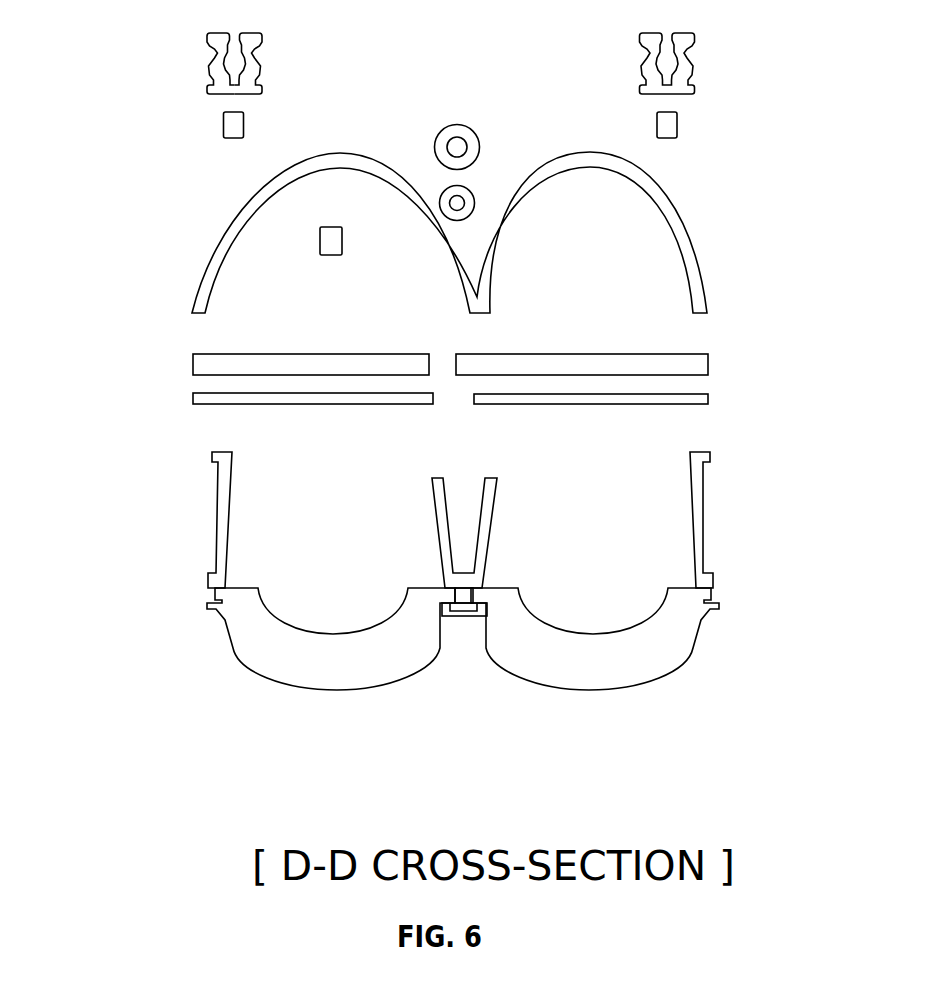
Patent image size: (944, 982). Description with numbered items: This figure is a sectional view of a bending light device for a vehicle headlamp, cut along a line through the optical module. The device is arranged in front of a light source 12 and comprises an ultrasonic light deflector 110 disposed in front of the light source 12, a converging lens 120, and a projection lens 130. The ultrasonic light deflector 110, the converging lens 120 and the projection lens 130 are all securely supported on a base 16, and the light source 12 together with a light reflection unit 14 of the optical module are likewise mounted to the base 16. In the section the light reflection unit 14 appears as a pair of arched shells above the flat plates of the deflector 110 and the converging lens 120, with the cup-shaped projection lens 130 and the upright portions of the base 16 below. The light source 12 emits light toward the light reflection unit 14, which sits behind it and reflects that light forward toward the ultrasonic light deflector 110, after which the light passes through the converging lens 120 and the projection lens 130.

The light source 12 is at (327, 238).
The light reflection unit 14 is at (330, 163).
The ultrasonic light deflector 110 is at (203, 362).
The converging lens 120 is at (203, 397).
The base 16 is at (223, 535).
The projection lens 130 is at (282, 658).